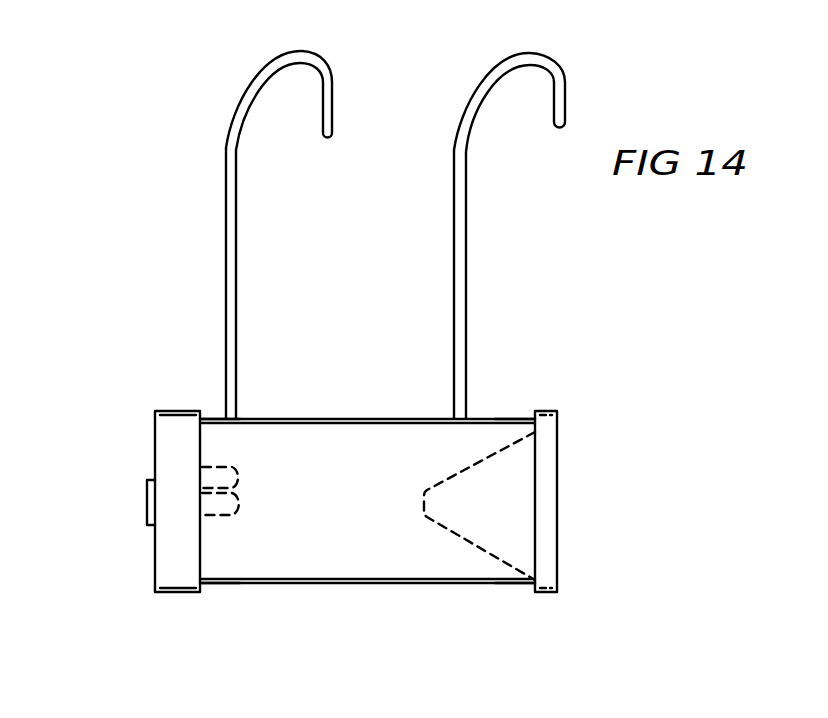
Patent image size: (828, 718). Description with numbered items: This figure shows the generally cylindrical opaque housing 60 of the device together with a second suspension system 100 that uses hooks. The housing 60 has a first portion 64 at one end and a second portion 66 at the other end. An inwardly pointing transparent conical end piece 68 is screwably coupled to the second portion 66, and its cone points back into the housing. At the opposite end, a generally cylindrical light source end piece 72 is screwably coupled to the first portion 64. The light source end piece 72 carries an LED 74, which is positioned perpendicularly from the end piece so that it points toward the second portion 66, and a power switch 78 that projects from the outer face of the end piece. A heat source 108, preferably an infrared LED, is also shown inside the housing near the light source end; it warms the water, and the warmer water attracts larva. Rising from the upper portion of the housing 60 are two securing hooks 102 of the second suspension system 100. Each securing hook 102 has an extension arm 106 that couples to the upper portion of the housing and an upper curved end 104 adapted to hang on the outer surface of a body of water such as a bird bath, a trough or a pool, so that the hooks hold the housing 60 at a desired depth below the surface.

The second suspension system 100 is at (300, 212).
The securing hooks 102 is at (492, 70).
The upper curved end 104 is at (416, 145).
The extension arm 106 is at (455, 285).
The housing body 60 is at (350, 438).
The first portion 64 is at (219, 418).
The second portion 66 is at (512, 418).
The transparent conical end piece 68 is at (548, 548).
The light source end piece 72 is at (160, 548).
The LED 74 is at (220, 514).
The power switch 78 is at (146, 497).
The heat source 108 is at (274, 477).